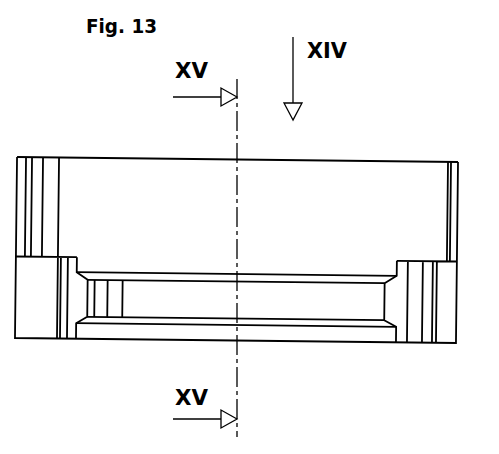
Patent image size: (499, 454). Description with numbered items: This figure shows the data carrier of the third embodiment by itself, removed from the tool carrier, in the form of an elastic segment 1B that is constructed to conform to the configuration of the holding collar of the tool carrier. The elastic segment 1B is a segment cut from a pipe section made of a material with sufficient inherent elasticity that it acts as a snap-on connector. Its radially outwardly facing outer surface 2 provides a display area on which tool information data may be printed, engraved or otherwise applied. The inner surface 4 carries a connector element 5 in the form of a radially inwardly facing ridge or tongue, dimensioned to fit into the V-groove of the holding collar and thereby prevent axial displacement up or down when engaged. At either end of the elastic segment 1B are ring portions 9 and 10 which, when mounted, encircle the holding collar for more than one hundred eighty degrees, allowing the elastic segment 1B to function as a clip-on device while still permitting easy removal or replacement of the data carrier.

The elastic segment 1B is at (404, 138).
The outer surface 2 is at (457, 203).
The inner surface 4 is at (348, 207).
The connector element 5 is at (253, 297).
The ring portion 9 is at (36, 299).
The ring portion 10 is at (428, 327).